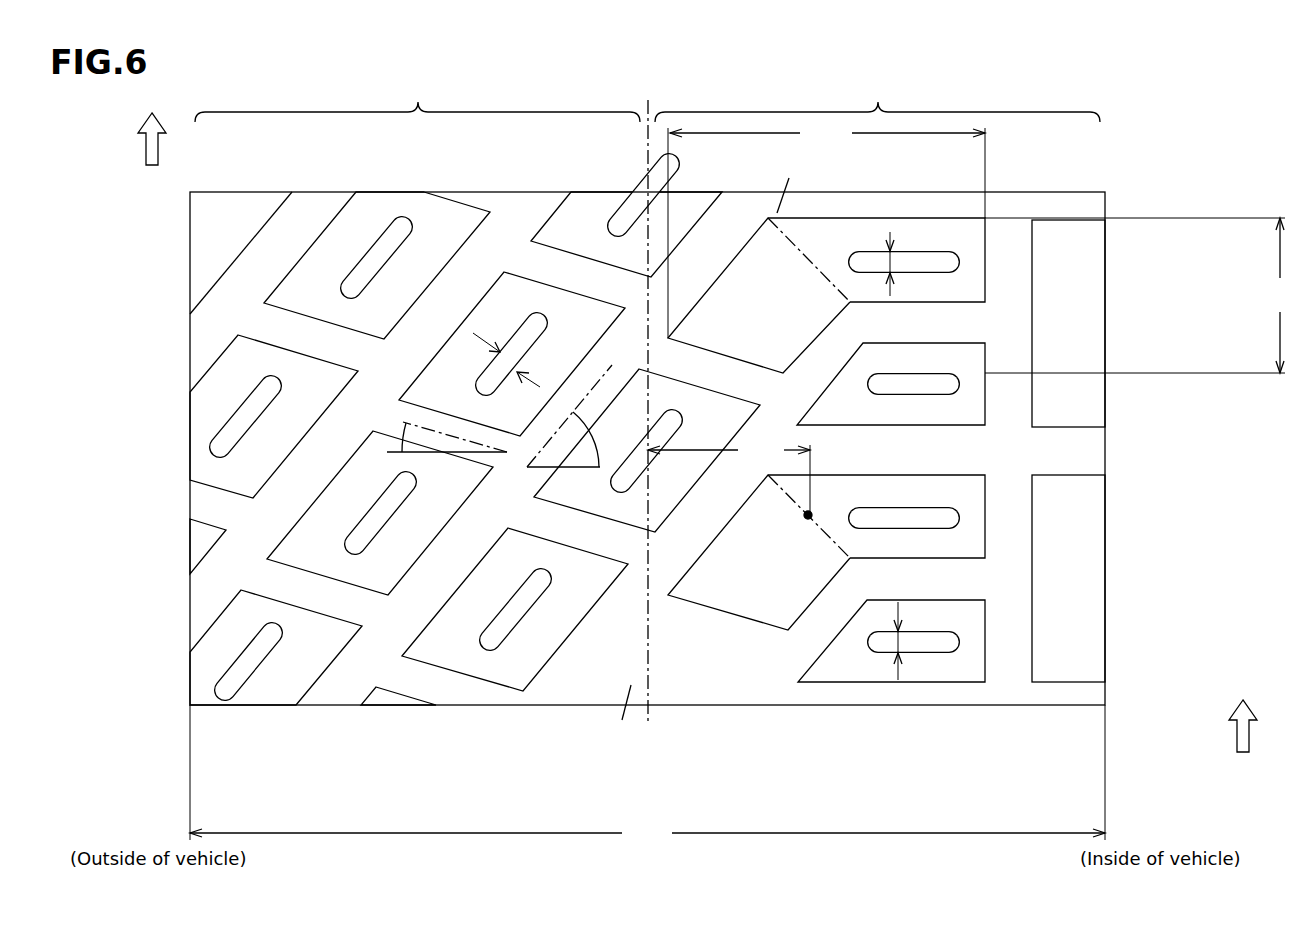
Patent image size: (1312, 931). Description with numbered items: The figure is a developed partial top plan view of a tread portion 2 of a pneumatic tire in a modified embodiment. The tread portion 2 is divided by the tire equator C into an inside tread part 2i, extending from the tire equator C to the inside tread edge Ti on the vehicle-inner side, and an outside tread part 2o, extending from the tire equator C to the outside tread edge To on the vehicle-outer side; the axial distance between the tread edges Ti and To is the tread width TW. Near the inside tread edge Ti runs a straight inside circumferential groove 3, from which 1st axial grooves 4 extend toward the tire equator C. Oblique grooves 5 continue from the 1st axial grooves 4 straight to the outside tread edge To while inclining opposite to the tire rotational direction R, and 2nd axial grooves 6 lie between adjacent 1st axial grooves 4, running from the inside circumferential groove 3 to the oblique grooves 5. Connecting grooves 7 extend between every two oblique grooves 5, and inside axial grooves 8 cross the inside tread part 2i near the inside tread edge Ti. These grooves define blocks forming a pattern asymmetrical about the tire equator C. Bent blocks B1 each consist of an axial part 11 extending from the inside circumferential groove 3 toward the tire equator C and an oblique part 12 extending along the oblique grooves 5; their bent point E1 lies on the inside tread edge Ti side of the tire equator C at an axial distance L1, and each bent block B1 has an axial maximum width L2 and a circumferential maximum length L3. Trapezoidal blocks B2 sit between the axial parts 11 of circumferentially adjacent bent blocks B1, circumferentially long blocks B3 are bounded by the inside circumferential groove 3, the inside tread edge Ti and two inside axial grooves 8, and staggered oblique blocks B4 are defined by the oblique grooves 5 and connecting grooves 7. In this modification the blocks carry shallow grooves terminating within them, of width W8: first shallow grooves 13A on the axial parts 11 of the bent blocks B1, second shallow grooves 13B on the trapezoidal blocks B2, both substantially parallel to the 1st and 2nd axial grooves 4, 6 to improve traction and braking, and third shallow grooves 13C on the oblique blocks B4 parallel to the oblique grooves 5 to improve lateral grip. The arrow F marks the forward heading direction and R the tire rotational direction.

The tread portion 2 is at (1125, 150).
The outside tread part 2o is at (417, 95).
The inside tread part 2i is at (877, 95).
The inside circumferential groove 3 is at (1008, 575).
The 1st axial groove 4 is at (958, 587).
The oblique groove 5 is at (205, 598).
The 2nd axial groove 6 is at (940, 450).
The connecting groove 7 is at (315, 335).
The inside axial groove 8 is at (1070, 212).
The axial part 11 is at (942, 290).
The oblique part 12 is at (790, 318).
The first shallow groove 13A is at (948, 262).
The second shallow groove 13B is at (948, 384).
The third shallow groove 13C is at (525, 340).
The bent block B1 is at (1193, 318).
The trapezoidal block B2 is at (965, 413).
The circumferentially long block B3 is at (1090, 308).
The oblique block B4 is at (317, 555).
The tire equator C is at (646, 400).
The bent point E1 is at (810, 517).
The axial distance L1 is at (729, 477).
The axial maximum width L2 is at (826, 230).
The circumferential maximum length L3 is at (1138, 295).
The tread width TW is at (647, 776).
The width of shallow grooves W8 is at (709, 454).
The outside tread edge To is at (190, 692).
The inside tread edge Ti is at (1105, 692).
The forward direction F is at (152, 125).
The tire rotational direction R is at (1243, 714).